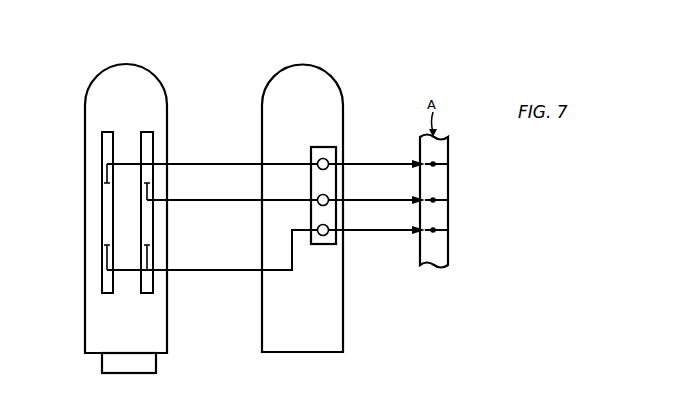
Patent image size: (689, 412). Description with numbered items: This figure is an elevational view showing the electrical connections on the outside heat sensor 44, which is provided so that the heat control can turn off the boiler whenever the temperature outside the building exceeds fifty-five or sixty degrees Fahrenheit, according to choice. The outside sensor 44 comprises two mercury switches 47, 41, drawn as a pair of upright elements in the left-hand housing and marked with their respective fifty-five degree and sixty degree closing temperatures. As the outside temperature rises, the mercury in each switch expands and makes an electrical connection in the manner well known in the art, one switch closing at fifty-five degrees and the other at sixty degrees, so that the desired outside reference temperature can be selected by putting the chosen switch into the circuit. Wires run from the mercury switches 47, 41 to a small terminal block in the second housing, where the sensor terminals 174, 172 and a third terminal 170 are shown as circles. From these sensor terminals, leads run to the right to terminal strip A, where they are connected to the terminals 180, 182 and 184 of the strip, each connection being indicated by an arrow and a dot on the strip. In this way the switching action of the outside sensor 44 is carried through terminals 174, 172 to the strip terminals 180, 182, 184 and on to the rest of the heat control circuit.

The outside heat sensor 44 is at (214, 80).
The mercury switch 47 is at (102, 140).
The mercury switch 41 is at (153, 146).
The terminal 174 is at (318, 161).
The terminal 172 is at (318, 198).
The terminal 170 is at (323, 236).
The terminal of terminal strip A 180 is at (436, 164).
The terminal of terminal strip A 182 is at (436, 200).
The terminal of terminal strip A 184 is at (436, 230).